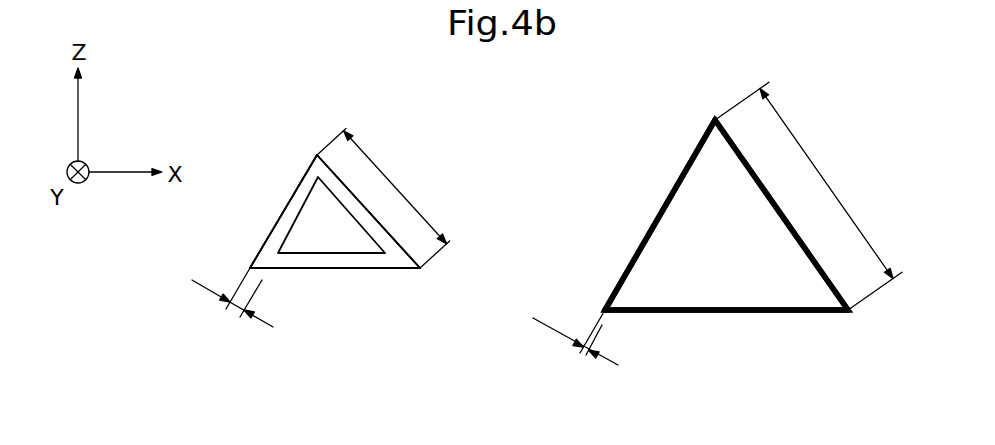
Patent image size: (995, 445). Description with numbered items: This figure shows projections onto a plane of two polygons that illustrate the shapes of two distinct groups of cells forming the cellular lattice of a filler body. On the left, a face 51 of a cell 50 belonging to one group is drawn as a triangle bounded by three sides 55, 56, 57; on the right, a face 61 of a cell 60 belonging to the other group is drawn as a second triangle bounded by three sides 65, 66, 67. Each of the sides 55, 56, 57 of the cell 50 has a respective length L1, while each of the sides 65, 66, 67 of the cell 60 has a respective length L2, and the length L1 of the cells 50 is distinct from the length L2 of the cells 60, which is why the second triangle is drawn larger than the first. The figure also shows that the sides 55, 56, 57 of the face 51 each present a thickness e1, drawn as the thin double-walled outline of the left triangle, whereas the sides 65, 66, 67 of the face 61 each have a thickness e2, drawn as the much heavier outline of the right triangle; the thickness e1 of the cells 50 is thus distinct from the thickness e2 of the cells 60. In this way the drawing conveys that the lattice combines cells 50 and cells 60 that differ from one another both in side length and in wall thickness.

The cell 50 is at (256, 166).
The face 51 is at (420, 268).
The side 55 is at (267, 232).
The side 56 is at (327, 268).
The side 57 is at (344, 185).
The cell 60 is at (618, 188).
The face 61 is at (755, 263).
The side 65 is at (690, 162).
The side 66 is at (733, 312).
The side 67 is at (748, 163).
The length L1 is at (383, 199).
The length L2 is at (808, 196).
The thickness e1 is at (232, 292).
The thickness e2 is at (575, 331).